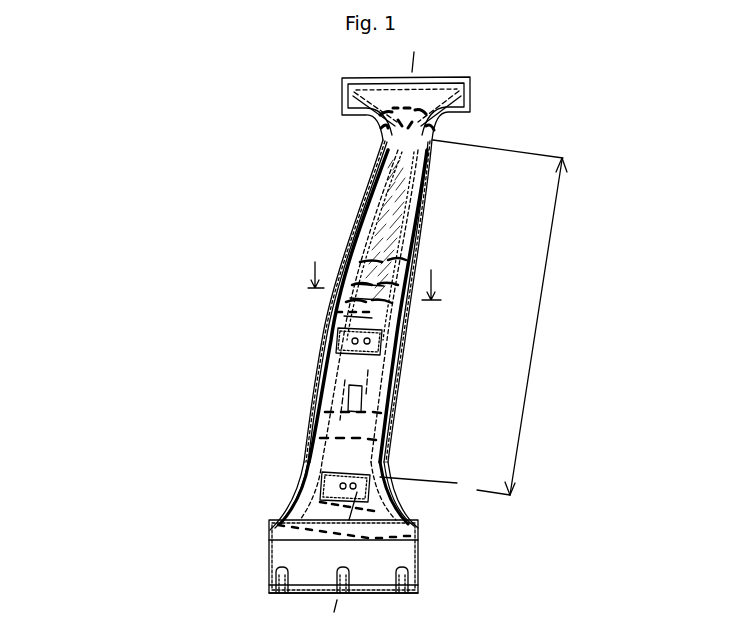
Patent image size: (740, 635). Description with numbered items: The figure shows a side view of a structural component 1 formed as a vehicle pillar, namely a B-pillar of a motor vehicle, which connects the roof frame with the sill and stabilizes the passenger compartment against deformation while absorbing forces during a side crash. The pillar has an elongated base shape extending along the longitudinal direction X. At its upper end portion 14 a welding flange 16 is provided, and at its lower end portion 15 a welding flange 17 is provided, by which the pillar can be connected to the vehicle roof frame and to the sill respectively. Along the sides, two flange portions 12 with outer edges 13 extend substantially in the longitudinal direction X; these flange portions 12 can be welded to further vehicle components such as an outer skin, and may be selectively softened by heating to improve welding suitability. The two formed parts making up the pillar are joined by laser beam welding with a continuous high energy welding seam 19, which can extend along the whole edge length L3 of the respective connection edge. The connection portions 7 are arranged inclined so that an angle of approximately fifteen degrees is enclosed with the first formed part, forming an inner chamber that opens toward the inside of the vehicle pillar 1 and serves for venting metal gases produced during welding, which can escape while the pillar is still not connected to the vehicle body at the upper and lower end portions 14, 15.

The structural component 1 is at (553, 95).
The connection portion 7 is at (310, 447).
The flange portion 12 is at (312, 407).
The outer edge 13 is at (415, 245).
The upper end portion 14 is at (293, 82).
The lower end portion 15 is at (220, 562).
The welding flange 16 is at (460, 88).
The welding flange 17 is at (418, 565).
The welding seam 19 is at (352, 235).
The edge length L3 is at (540, 293).
The longitudinal direction X is at (345, 548).